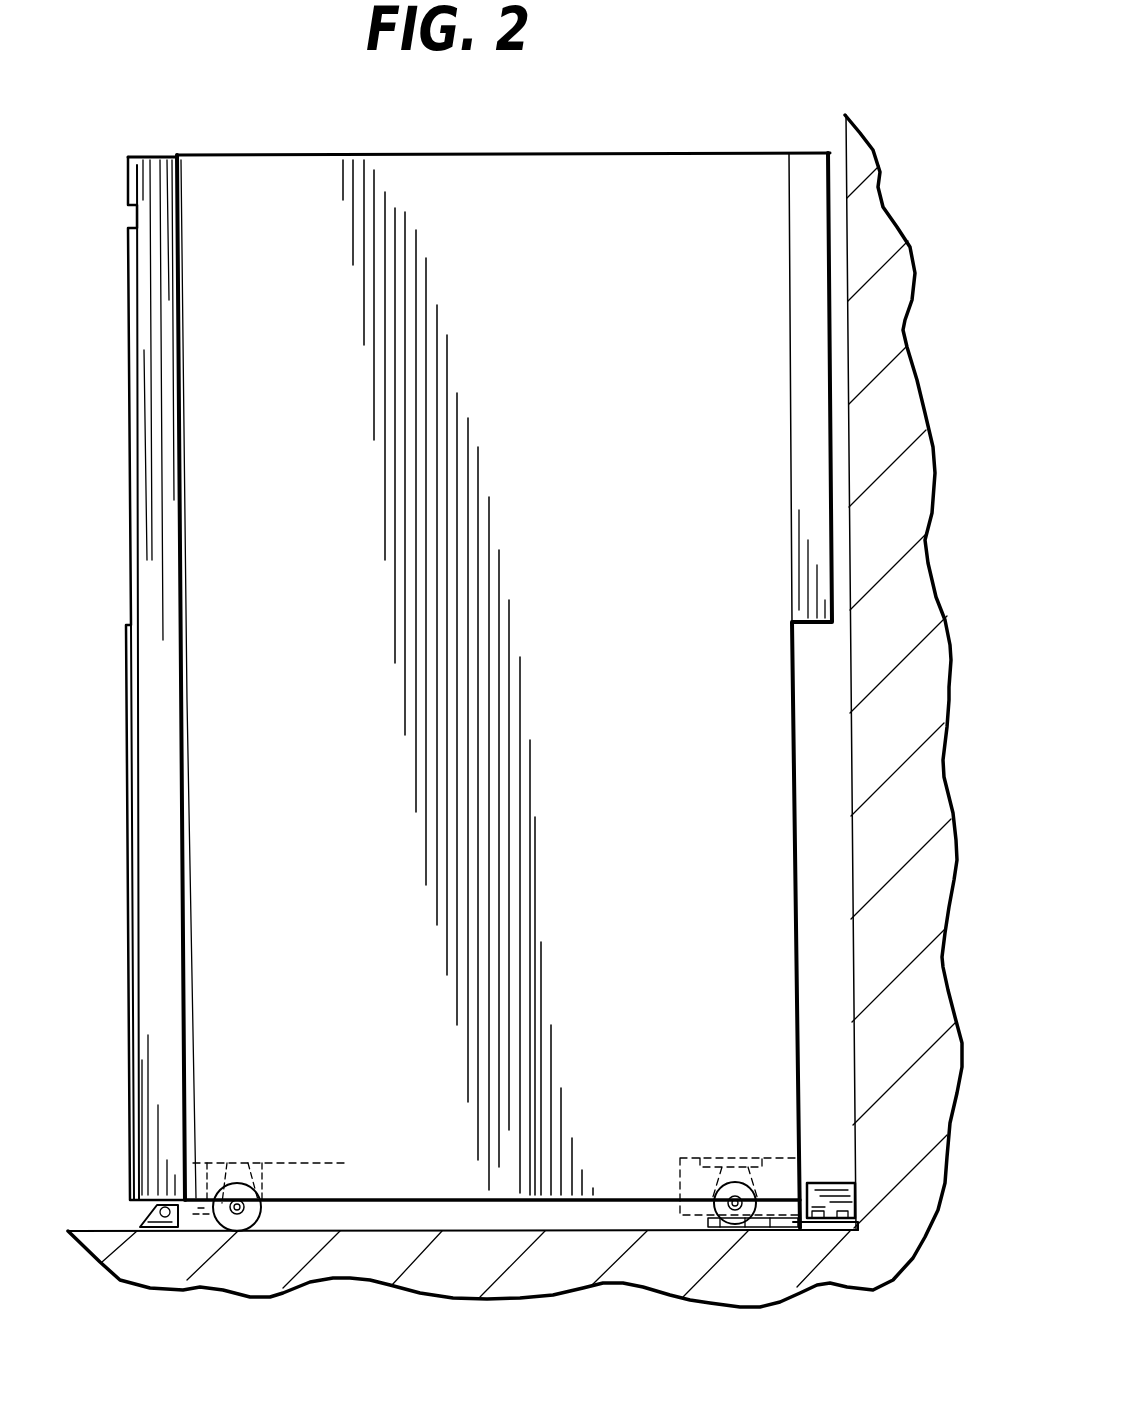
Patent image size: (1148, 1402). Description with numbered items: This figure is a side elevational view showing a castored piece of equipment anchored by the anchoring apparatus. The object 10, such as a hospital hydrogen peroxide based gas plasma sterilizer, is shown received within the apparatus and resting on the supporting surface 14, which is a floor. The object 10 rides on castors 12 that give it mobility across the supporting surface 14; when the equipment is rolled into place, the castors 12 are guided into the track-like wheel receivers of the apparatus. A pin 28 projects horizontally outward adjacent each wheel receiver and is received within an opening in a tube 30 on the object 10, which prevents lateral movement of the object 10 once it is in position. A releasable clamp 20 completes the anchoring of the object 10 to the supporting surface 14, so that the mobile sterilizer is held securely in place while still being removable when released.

The object 10 is at (570, 308).
The castors 12 is at (260, 1210).
The supporting surface 14 is at (628, 1230).
The releasable clamp 20 is at (197, 1222).
The pin 28 is at (794, 1195).
The tube 30 is at (682, 1157).